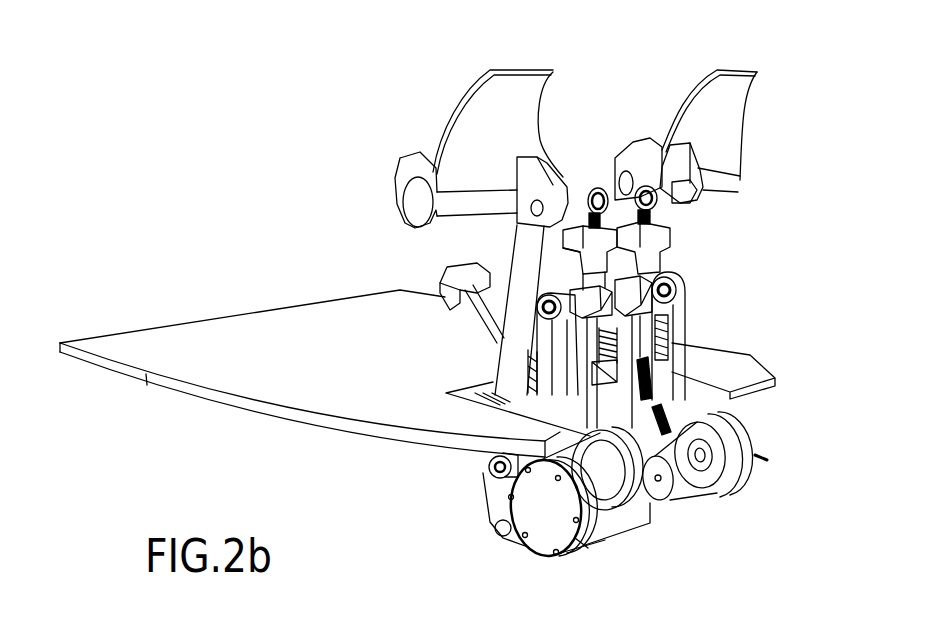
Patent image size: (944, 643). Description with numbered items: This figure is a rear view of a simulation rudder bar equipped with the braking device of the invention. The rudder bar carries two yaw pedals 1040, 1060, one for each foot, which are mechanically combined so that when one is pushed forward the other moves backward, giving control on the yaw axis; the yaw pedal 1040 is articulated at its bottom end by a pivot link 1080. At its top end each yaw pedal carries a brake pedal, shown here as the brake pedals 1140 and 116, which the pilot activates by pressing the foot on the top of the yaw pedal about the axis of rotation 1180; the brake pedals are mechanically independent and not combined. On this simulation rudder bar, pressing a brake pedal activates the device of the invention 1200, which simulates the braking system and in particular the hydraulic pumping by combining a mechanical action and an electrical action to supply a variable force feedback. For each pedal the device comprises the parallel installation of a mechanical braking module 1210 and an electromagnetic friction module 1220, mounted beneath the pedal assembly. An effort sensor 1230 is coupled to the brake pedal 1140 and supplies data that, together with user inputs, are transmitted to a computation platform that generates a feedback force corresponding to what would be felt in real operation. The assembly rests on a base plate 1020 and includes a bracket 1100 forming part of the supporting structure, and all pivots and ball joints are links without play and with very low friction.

The brake pedal 116 is at (462, 88).
The board 1020 is at (180, 322).
The yaw pedal 1040 is at (730, 187).
The yaw pedal 1060 is at (448, 210).
The pivot link 1080 is at (483, 462).
The bracket tab 1100 is at (440, 273).
The brake pedal 1140 is at (743, 100).
The axis of rotation 1180 is at (553, 193).
The device of the invention 1200 is at (680, 330).
The mechanical braking module 1210 is at (607, 390).
The electromagnetic friction module 1220 is at (548, 515).
The effort sensor 1230 is at (673, 247).